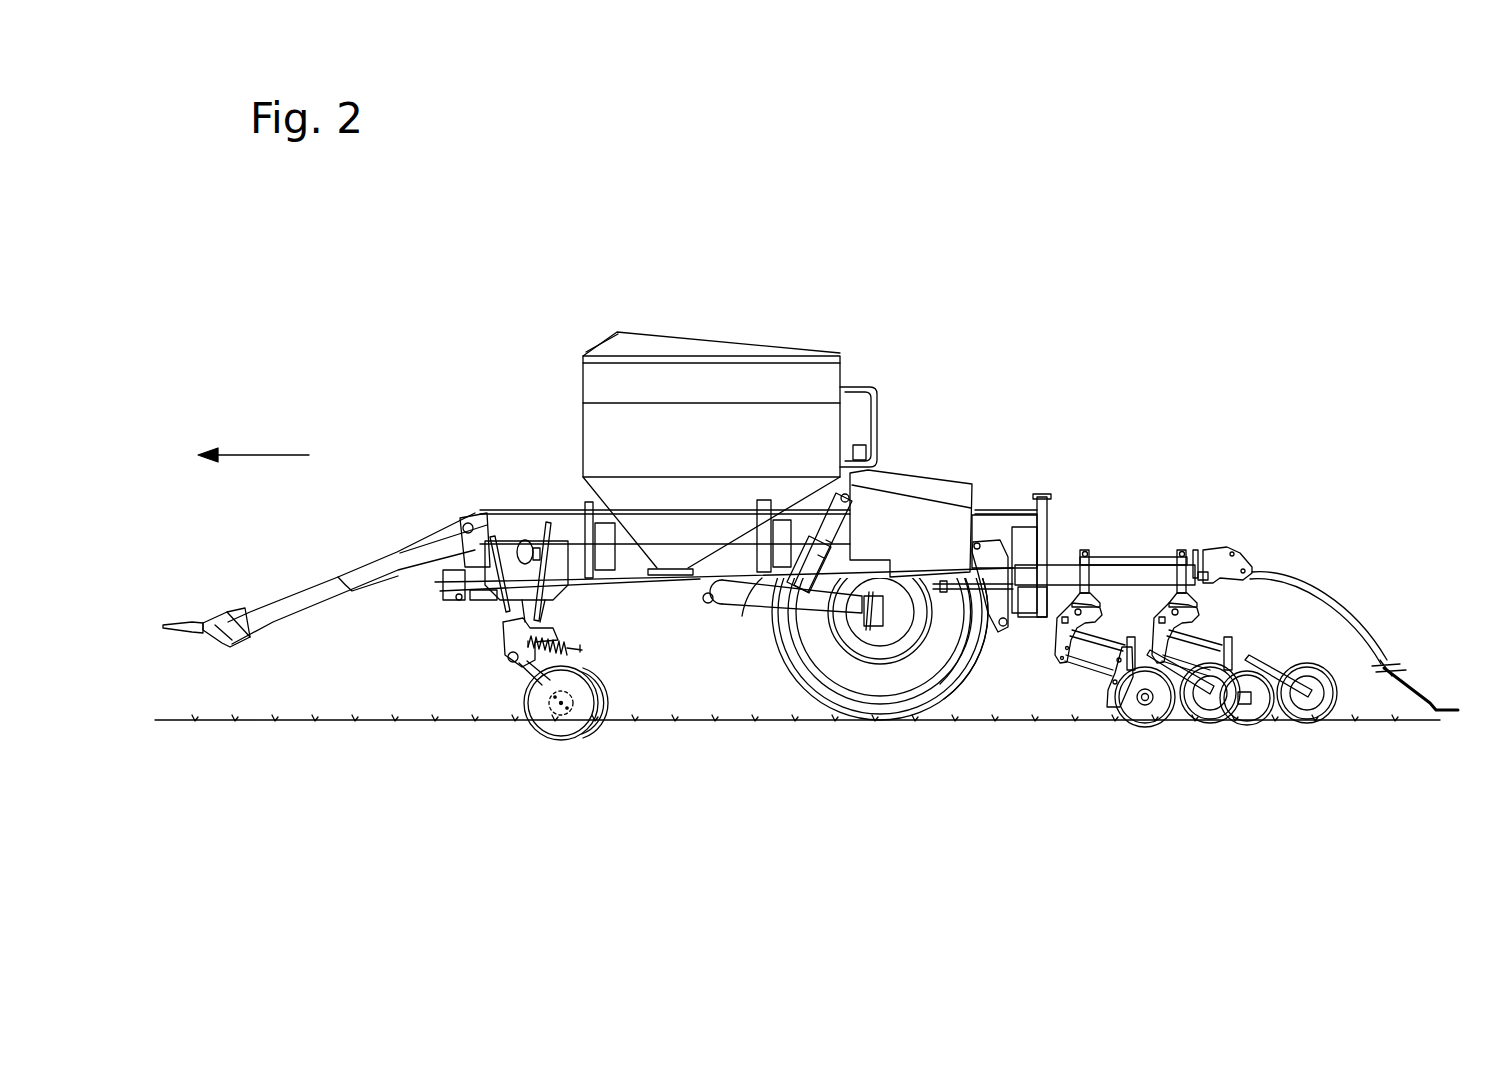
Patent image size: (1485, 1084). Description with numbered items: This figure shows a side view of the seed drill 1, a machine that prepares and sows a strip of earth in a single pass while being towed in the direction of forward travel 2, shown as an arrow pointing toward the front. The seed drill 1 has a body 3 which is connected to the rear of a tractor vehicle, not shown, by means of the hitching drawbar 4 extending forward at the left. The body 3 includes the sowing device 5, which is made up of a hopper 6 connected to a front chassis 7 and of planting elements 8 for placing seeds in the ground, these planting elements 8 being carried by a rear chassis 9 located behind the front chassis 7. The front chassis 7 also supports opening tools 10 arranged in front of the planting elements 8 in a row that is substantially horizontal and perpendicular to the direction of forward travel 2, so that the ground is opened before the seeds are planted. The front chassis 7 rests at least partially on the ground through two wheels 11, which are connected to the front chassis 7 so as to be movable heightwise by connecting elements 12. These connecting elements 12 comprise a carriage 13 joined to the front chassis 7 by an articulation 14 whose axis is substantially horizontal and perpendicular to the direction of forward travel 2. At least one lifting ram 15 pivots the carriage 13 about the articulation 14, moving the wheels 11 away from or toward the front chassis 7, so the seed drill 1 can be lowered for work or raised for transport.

The seed drill 1 is at (1040, 328).
The direction of forward travel 2 is at (243, 455).
The body 3 is at (800, 308).
The hitching drawbar 4 is at (325, 580).
The sowing device 5 is at (516, 336).
The hopper 6 is at (703, 338).
The front chassis 7 is at (548, 510).
The planting elements 8 is at (1264, 502).
The rear chassis 9 is at (1005, 513).
The opening tools 10 is at (527, 690).
The wheels 11 is at (960, 683).
The connecting elements 12 is at (760, 705).
The carriage 13 is at (748, 618).
The articulation 14 is at (695, 632).
The lifting ram 15 is at (860, 570).